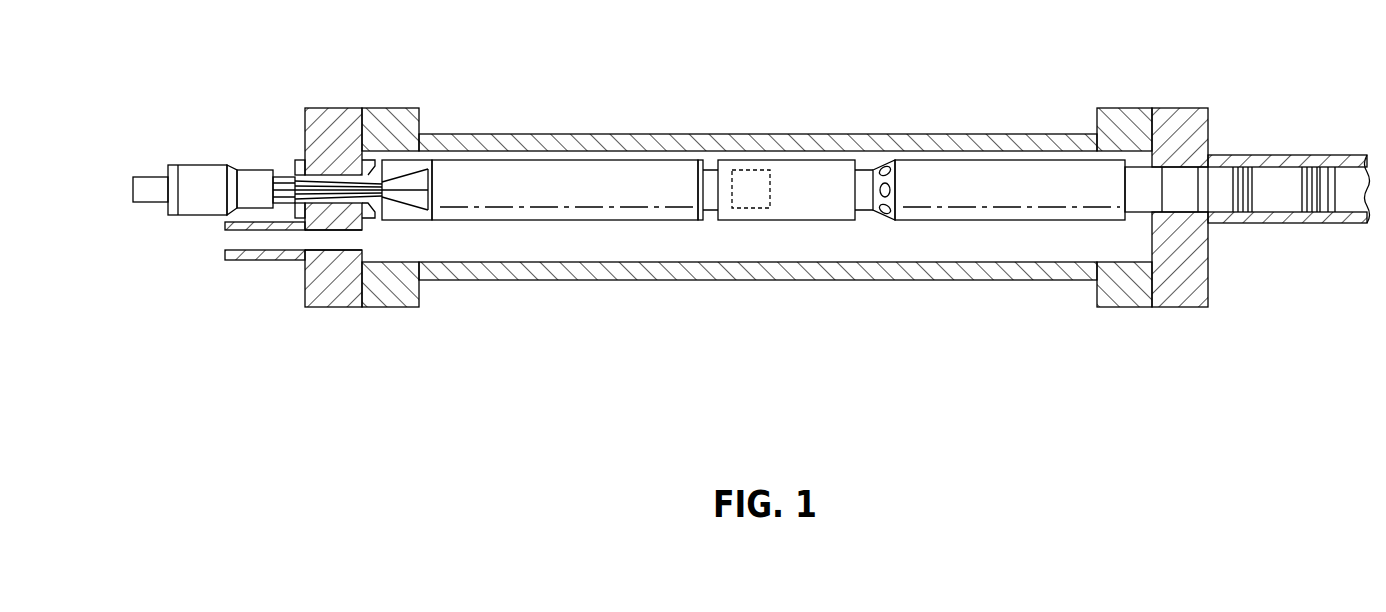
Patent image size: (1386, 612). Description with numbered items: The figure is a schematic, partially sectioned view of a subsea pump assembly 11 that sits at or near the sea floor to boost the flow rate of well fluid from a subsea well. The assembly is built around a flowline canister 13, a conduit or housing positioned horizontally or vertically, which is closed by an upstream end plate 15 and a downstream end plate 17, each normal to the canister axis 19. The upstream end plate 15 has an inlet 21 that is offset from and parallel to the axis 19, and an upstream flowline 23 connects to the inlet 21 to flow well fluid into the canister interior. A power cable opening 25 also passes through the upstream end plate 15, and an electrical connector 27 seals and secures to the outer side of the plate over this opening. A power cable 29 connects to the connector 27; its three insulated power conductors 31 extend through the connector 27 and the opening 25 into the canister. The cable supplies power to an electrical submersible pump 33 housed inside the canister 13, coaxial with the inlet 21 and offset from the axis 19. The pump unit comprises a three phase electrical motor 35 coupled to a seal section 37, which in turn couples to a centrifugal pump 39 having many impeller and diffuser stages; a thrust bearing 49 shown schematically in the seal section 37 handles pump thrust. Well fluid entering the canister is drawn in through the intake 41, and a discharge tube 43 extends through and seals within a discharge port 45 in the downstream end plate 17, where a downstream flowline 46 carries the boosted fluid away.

The subsea pump assembly 11 is at (772, 52).
The flowline canister 13 is at (893, 281).
The upstream end plate 15 is at (304, 286).
The downstream end plate 17 is at (1209, 260).
The axis 19 is at (1070, 206).
The inlet 21 is at (337, 242).
The flowline 23 is at (238, 261).
The power cable opening 25 is at (334, 174).
The electrical connector 27 is at (259, 170).
The power cable 29 is at (145, 182).
The power conductors 31 is at (289, 184).
The electrical submersible pump 33 is at (960, 152).
The electrical motor 35 is at (505, 180).
The seal section 37 is at (750, 160).
The centrifugal pump 39 is at (925, 170).
The intake 41 is at (880, 213).
The discharge tube 43 is at (1209, 178).
The discharge port 45 is at (1180, 180).
The downstream flowline 46 is at (1297, 224).
The thrust bearing 49 is at (753, 199).